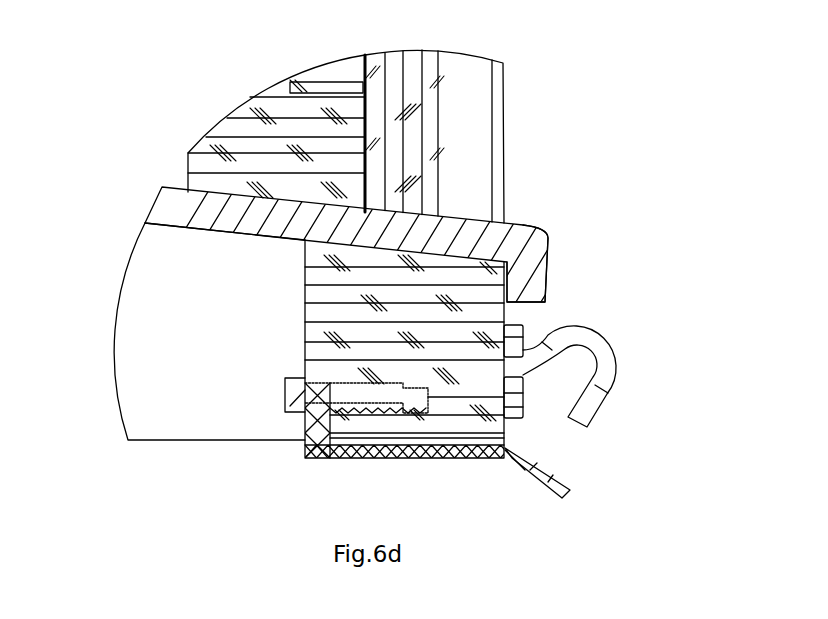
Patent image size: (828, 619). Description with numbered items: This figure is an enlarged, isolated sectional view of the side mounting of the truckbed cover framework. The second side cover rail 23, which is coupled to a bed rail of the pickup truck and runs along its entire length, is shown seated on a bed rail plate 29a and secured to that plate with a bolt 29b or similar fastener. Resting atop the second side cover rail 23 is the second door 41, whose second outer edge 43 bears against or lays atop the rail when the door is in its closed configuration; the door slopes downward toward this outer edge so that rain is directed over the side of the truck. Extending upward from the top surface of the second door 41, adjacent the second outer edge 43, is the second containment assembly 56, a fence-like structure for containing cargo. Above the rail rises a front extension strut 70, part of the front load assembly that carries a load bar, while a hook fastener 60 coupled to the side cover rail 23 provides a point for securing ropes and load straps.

The second side cover rail 23 is at (305, 333).
The bed rail plate 29a is at (477, 460).
The bolt 29b is at (297, 402).
The second door 41 is at (232, 228).
The second outer edge 43 is at (533, 243).
The second containment assembly 56 is at (267, 153).
The hook fastener 60 is at (623, 359).
The front extension strut 70 is at (468, 106).